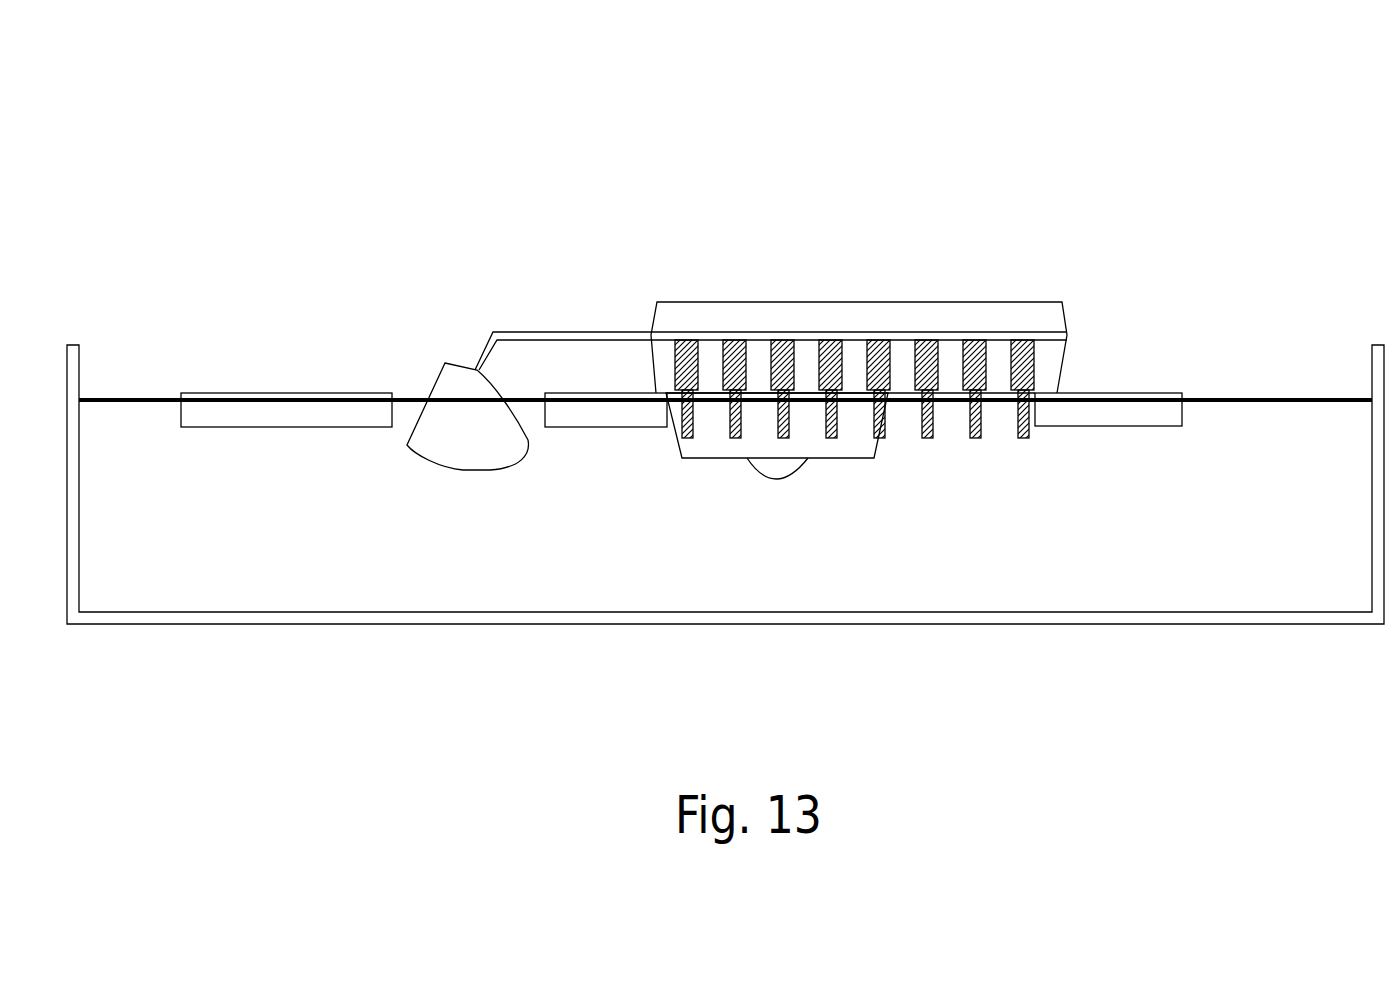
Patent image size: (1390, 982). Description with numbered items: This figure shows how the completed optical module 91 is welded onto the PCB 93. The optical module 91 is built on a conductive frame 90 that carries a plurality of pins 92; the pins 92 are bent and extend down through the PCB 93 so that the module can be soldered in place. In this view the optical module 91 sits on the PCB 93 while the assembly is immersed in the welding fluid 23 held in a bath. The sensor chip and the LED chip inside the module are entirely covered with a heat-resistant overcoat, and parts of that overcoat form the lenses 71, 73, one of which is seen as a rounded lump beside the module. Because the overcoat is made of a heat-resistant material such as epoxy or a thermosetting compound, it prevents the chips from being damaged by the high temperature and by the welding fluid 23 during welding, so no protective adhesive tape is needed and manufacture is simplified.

The welding fluid 23 is at (1220, 547).
The lens 71 is at (790, 470).
The lens 73 is at (505, 457).
The conductive frame 90 is at (582, 336).
The optical module 91 is at (848, 248).
The pins 92 is at (675, 365).
The PCB 93 is at (1183, 393).